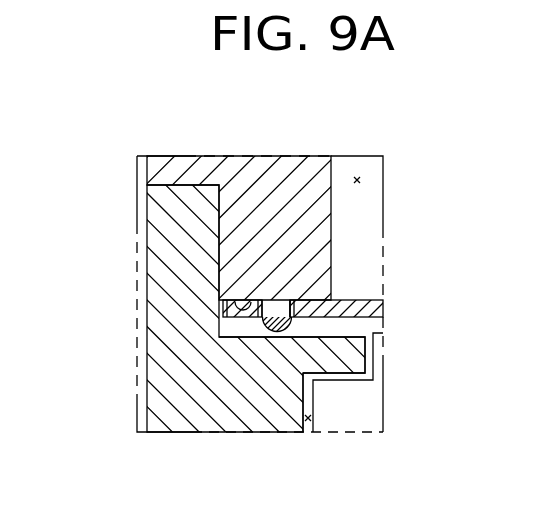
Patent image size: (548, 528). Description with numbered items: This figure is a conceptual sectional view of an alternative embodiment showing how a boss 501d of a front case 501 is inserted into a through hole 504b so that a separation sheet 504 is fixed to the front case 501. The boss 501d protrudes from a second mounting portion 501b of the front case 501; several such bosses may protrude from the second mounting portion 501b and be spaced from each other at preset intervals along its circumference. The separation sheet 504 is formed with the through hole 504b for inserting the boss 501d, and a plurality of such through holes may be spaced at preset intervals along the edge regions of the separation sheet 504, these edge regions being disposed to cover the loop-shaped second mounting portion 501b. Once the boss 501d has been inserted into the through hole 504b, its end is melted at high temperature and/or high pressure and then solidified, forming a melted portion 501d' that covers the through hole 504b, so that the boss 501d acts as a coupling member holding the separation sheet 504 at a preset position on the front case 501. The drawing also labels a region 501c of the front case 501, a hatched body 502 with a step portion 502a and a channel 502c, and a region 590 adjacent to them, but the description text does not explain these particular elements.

The front case 501 is at (162, 173).
The second layer 502 is at (162, 295).
The separation sheet 504 is at (370, 307).
The through hole 504b is at (290, 300).
The second mounting portion 501b is at (236, 300).
The first layer region 501c is at (357, 180).
The boss 501d is at (285, 209).
The melted portion 501d' is at (321, 275).
The step portion of second layer 502a is at (345, 357).
The channel of second layer 502c is at (308, 421).
The substrate region 590 is at (362, 407).